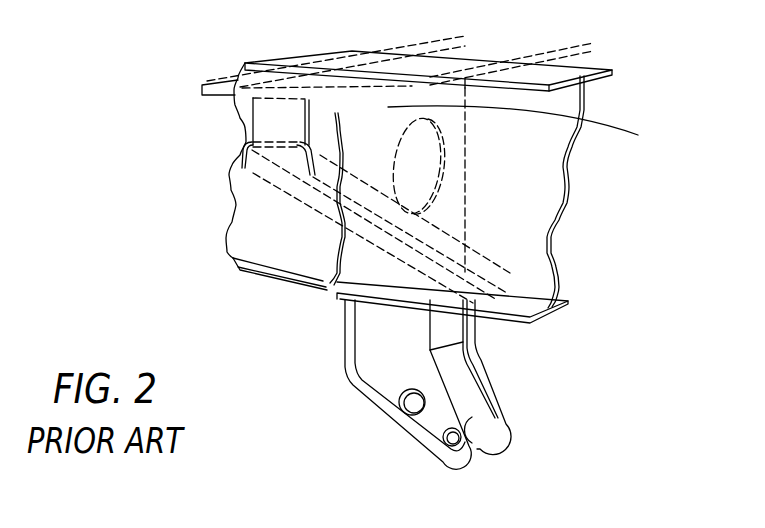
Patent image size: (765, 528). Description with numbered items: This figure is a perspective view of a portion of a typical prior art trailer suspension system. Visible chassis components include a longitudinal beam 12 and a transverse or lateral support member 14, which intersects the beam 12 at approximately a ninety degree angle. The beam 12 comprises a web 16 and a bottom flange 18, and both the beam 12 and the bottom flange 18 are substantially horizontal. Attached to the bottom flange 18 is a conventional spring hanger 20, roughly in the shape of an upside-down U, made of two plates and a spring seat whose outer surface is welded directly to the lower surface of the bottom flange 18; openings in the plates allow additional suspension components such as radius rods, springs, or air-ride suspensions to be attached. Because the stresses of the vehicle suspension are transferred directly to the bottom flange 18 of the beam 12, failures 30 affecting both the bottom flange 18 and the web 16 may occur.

The longitudinal beam 12 is at (523, 243).
The transverse or lateral support member 14 is at (436, 94).
The web 16 is at (528, 183).
The bottom flange 18 is at (267, 267).
The spring hanger 20 is at (378, 358).
The failures 30 is at (340, 255).